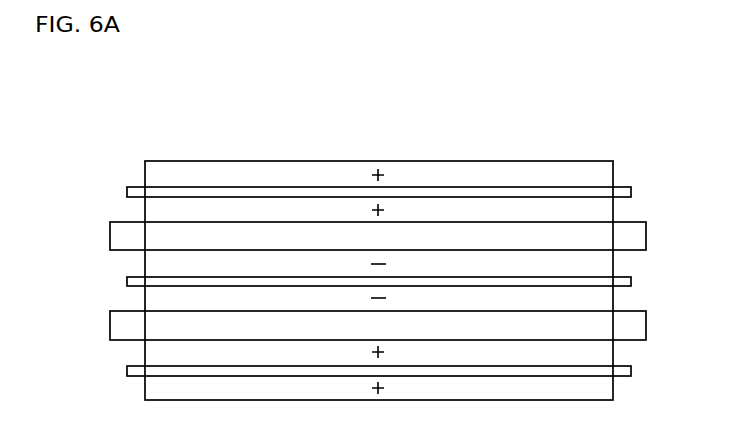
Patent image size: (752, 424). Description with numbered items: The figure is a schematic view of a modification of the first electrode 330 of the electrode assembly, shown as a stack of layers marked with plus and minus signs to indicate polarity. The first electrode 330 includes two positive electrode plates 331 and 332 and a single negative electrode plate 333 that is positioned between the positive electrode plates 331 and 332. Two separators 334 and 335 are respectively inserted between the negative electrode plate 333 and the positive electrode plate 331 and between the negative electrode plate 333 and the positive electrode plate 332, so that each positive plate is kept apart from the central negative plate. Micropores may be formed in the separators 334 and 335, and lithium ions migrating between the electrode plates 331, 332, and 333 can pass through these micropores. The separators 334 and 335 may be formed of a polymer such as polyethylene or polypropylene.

The first electrode 330 is at (106, 134).
The positive electrode plate 331 is at (613, 173).
The positive electrode plate 332 is at (613, 350).
The negative electrode plate 333 is at (613, 265).
The separator 334 is at (113, 235).
The separator 335 is at (113, 324).